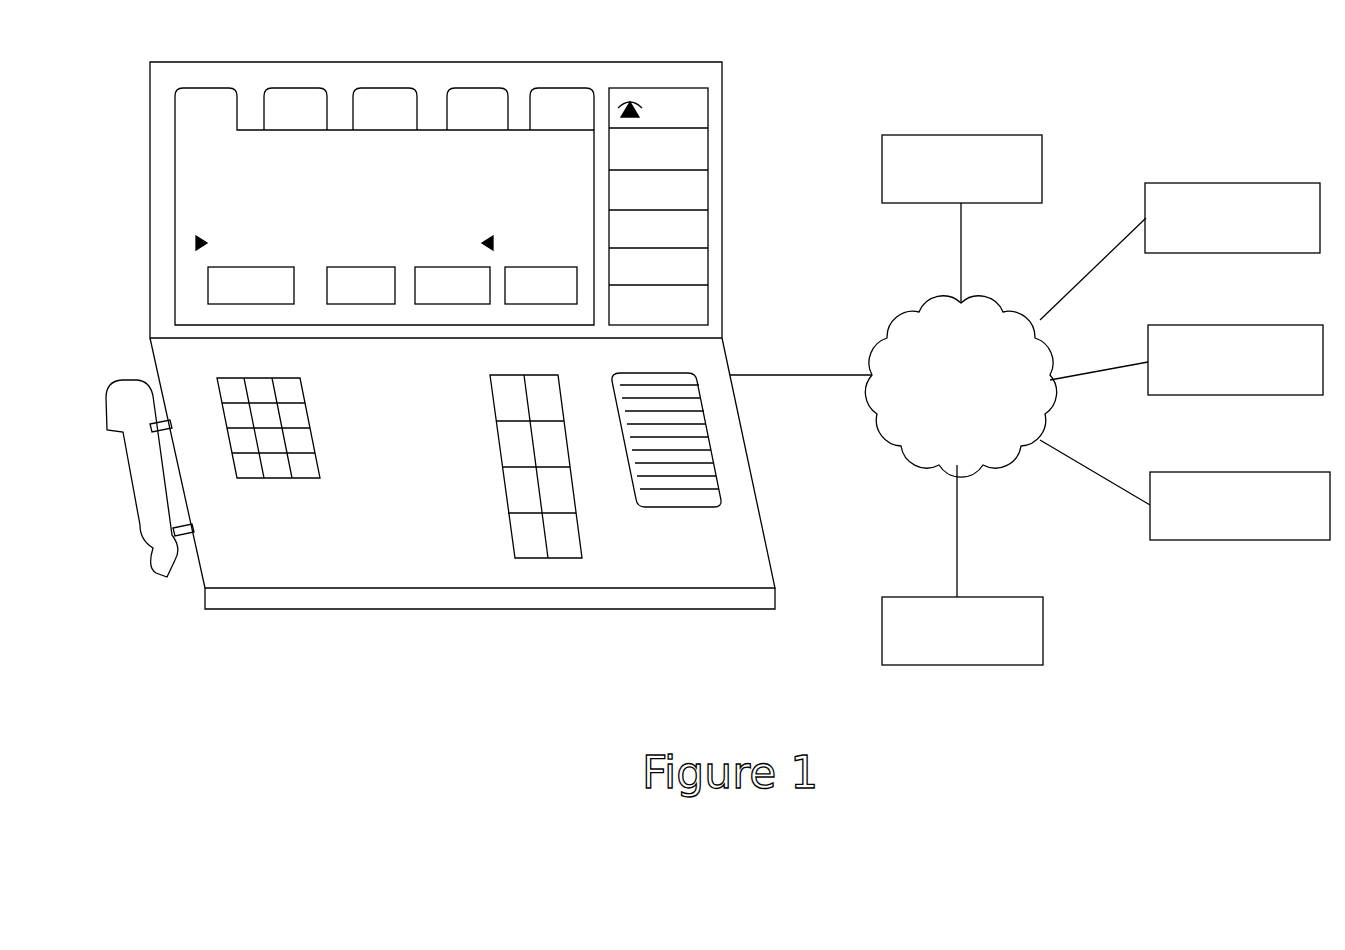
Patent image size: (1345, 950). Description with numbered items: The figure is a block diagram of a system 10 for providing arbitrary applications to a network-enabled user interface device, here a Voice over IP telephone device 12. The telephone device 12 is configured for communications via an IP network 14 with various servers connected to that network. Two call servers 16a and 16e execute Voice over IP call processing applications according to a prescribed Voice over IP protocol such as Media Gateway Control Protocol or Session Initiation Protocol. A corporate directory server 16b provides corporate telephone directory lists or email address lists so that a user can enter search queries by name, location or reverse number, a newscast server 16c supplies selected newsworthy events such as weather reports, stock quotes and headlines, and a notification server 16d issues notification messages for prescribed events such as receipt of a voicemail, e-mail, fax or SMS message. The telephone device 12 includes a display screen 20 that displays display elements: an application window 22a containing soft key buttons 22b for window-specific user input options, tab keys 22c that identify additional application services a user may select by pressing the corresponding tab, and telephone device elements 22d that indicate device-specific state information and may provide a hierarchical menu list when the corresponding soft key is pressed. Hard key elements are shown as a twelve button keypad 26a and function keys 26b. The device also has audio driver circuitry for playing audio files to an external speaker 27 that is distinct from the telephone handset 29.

The system 10 is at (428, 433).
The Voice over IP telephone device 12 is at (304, 652).
The IP network 14 is at (978, 436).
The call server 16a is at (975, 135).
The corporate directory server 16b is at (1228, 183).
The newscast server 16c is at (1228, 325).
The notification server 16d is at (1228, 472).
The call server 16e is at (1043, 630).
The display screen 20 is at (428, 209).
The application window 22a is at (184, 136).
The soft key buttons 22b is at (542, 304).
The tab keys 22c is at (470, 89).
The telephone device elements 22d is at (697, 104).
The twelve button keypad 26a is at (266, 494).
The function keys 26b is at (484, 430).
The external speaker 27 is at (668, 507).
The telephone handset 29 is at (160, 576).